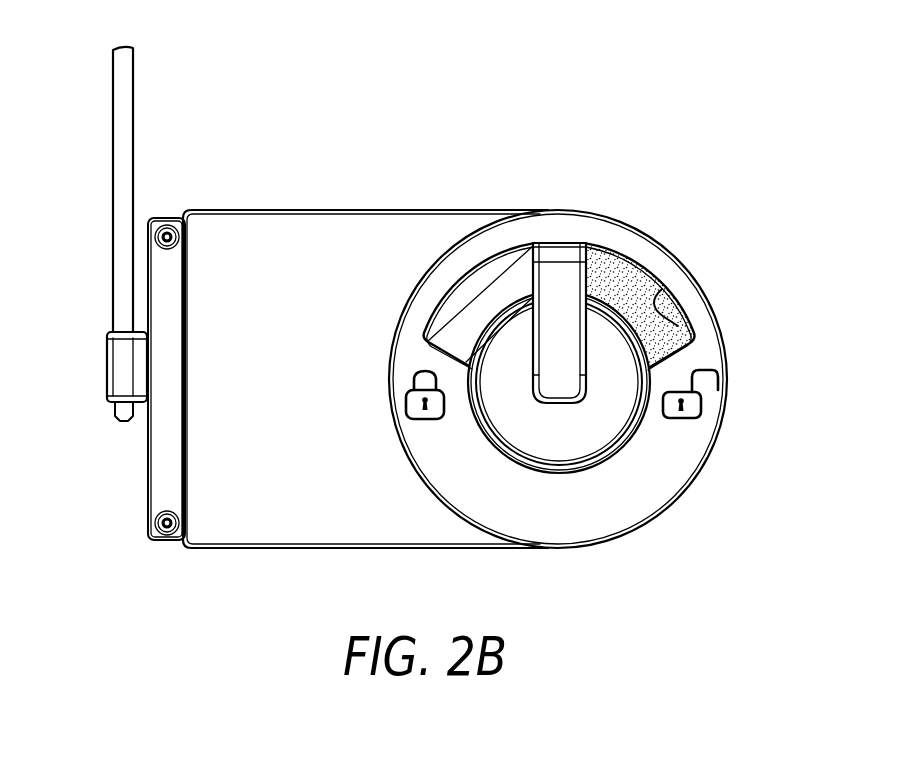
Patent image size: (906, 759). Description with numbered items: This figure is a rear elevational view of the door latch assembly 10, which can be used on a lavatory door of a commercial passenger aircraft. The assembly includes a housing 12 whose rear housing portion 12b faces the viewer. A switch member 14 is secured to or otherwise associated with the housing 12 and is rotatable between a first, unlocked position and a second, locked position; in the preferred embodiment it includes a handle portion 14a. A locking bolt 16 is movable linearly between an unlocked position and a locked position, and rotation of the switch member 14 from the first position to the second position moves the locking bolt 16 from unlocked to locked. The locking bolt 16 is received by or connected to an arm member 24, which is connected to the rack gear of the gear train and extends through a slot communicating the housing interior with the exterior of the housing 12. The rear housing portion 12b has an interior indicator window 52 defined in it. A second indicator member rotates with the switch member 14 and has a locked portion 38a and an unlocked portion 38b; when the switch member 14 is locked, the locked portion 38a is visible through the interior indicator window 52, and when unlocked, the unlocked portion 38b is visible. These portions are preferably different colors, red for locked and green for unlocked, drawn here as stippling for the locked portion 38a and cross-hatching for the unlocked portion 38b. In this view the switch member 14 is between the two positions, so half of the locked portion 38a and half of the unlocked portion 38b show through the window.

The door latch assembly 10 is at (714, 174).
The housing 12 is at (290, 226).
The rear housing portion 12b is at (306, 411).
The switch member 14 is at (598, 415).
The handle portion 14a is at (557, 270).
The locking bolt 16 is at (114, 133).
The arm member 24 is at (113, 372).
The locked portion 38a is at (610, 271).
The unlocked portion 38b is at (507, 278).
The interior indicator window 52 is at (659, 303).